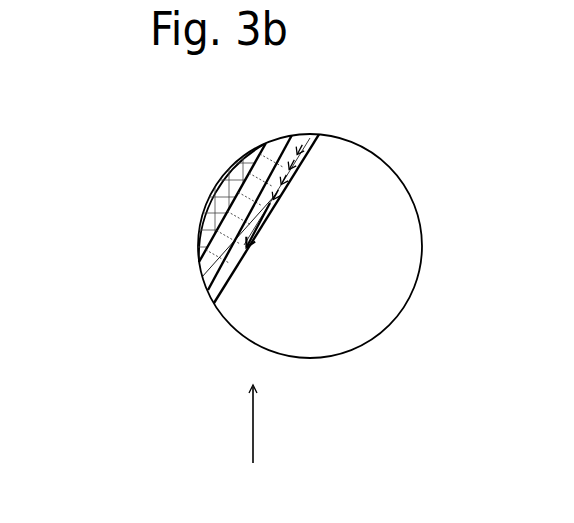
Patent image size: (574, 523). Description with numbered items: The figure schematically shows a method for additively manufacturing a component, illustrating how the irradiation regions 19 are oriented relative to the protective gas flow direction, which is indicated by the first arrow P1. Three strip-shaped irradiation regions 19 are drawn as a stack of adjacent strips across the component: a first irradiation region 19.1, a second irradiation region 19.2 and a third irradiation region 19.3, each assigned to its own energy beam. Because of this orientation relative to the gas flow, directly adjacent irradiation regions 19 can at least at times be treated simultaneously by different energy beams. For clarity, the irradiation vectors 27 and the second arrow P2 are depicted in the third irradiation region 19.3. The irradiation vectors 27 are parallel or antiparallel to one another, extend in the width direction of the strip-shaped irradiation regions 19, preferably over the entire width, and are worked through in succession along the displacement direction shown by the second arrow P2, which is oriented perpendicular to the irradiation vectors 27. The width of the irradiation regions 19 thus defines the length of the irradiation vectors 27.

The irradiation region 19 is at (176, 244).
The first irradiation region 19.1 is at (207, 230).
The second irradiation region 19.2 is at (210, 265).
The third irradiation region 19.3 is at (225, 291).
The irradiation vector 27 is at (294, 134).
The first arrow P1 is at (255, 418).
The second arrow P2 is at (263, 222).